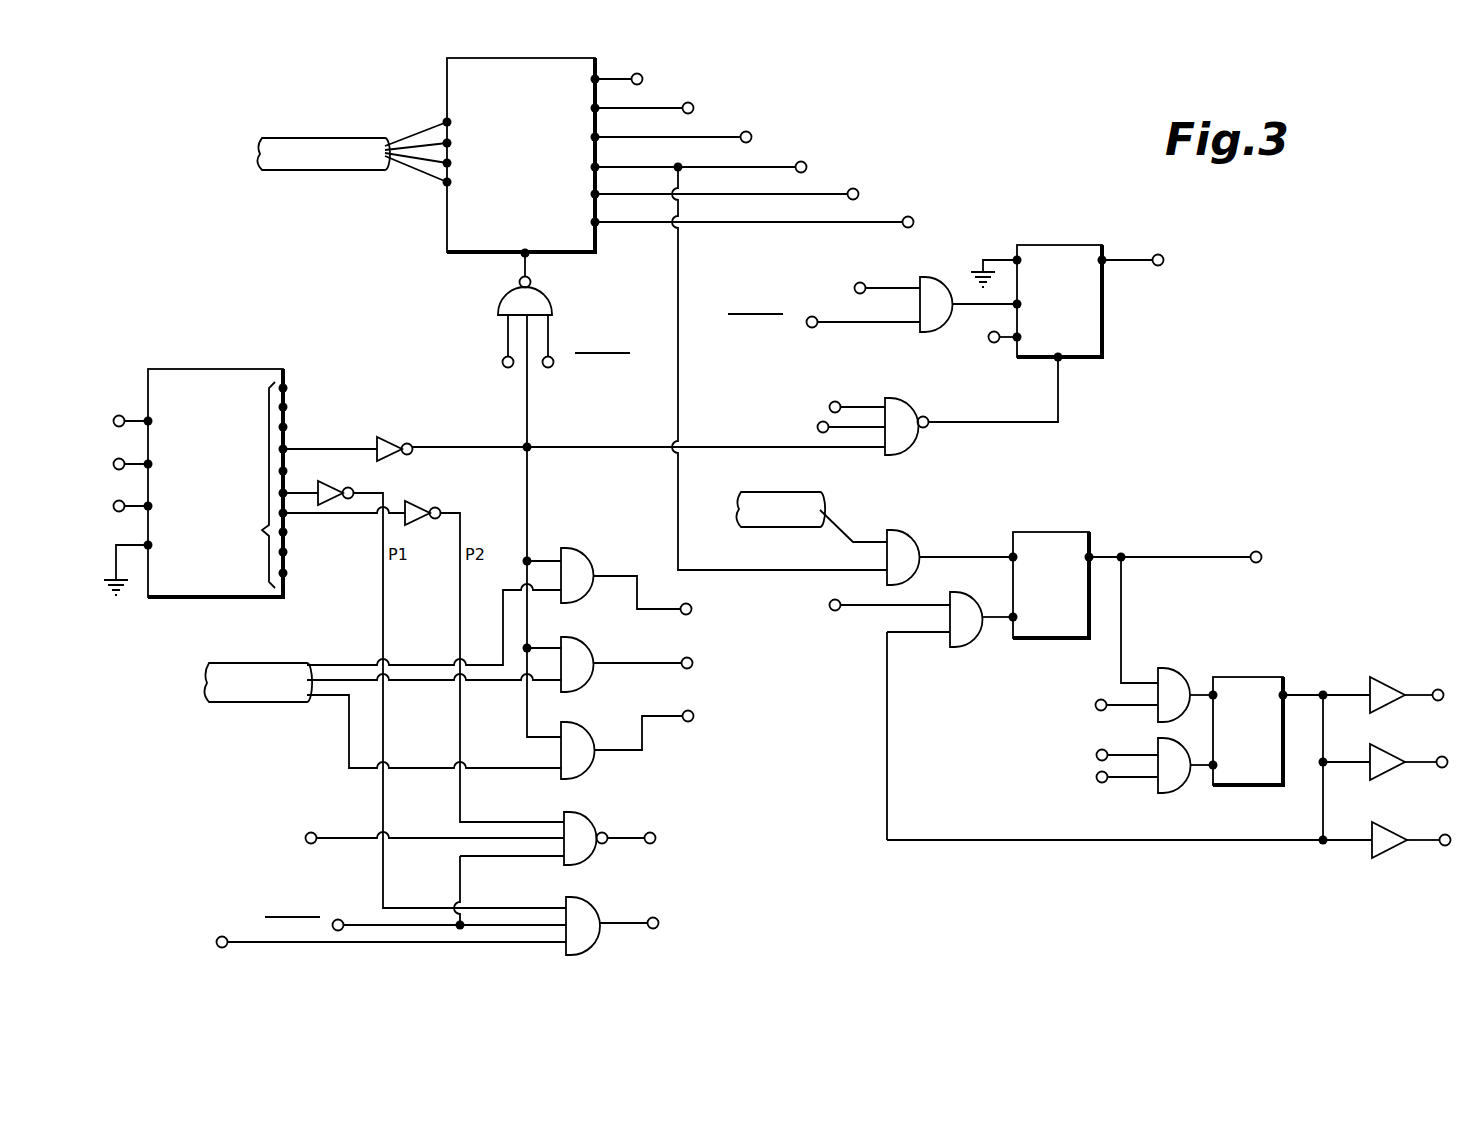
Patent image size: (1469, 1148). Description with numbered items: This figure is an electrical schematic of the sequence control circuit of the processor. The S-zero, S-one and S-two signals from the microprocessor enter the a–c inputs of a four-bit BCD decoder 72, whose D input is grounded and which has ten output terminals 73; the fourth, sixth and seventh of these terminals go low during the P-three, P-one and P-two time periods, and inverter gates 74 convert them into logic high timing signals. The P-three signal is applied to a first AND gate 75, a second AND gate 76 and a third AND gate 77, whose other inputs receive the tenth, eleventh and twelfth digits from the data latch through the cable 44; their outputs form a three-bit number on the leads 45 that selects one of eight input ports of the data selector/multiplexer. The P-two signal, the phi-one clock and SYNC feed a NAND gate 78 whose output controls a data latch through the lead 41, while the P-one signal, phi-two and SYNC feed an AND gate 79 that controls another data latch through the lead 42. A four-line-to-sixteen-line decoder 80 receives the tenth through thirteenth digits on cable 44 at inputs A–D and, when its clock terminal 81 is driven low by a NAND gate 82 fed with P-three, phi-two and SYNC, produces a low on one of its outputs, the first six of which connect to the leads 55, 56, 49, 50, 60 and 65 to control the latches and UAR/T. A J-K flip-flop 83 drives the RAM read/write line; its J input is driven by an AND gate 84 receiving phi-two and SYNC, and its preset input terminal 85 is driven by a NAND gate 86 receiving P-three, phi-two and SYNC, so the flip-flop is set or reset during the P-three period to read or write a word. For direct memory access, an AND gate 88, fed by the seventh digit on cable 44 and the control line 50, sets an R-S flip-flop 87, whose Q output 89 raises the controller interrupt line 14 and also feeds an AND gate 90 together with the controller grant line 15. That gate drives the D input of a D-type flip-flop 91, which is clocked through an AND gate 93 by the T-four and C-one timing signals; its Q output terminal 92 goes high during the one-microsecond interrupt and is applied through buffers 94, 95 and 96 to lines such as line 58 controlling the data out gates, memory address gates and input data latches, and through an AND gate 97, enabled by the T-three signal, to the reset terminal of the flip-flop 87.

The controller interrupt line 14 is at (1258, 545).
The controller grant line 15 is at (1100, 699).
The lead 41 is at (656, 835).
The lead 42 is at (659, 920).
The cable 44 is at (318, 138).
The leads 45 is at (692, 611).
The lead 49 is at (752, 134).
The control line 50 is at (807, 164).
The lead 55 is at (643, 76).
The lead 56 is at (694, 105).
The line 58 is at (1440, 688).
The lead 60 is at (859, 191).
The lead 65 is at (914, 219).
The four-bit BCD decoder 72 is at (235, 369).
The output terminals 73 is at (262, 530).
The inverter gates 74 is at (362, 462).
The first AND gate 75 is at (580, 548).
The second AND gate 76 is at (587, 646).
The third AND gate 77 is at (596, 722).
The NAND gate 78 is at (586, 812).
The AND gate 79 is at (600, 897).
The four-line-to-sixteen-line decoder 80 is at (447, 63).
The clock terminal 81 is at (518, 259).
The NAND gate 82 is at (500, 305).
The J-K flip-flop 83 is at (1078, 311).
The AND gate 84 is at (938, 275).
The preset input terminal 85 is at (1065, 360).
The NAND gate 86 is at (920, 442).
The R-S flip-flop 87 is at (1066, 605).
The AND gate 88 is at (898, 530).
The Q output 89 is at (1098, 545).
The AND gate 90 is at (1183, 670).
The D-type flip-flop 91 is at (1262, 745).
The Q output terminal 92 is at (1290, 685).
The AND gate 93 is at (1178, 793).
The buffer 94 is at (1385, 680).
The buffer 95 is at (1383, 752).
The buffer 96 is at (1390, 828).
The AND gate 97 is at (970, 643).